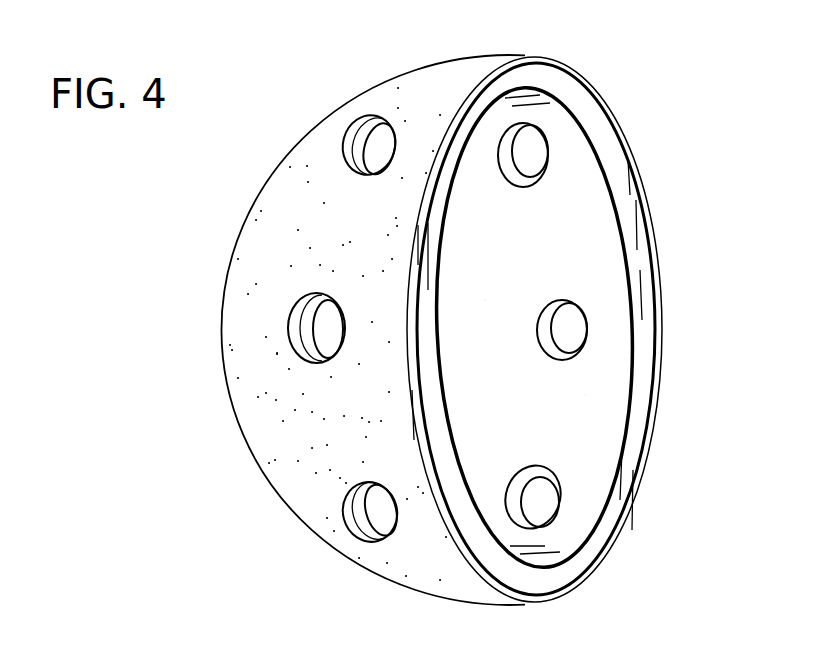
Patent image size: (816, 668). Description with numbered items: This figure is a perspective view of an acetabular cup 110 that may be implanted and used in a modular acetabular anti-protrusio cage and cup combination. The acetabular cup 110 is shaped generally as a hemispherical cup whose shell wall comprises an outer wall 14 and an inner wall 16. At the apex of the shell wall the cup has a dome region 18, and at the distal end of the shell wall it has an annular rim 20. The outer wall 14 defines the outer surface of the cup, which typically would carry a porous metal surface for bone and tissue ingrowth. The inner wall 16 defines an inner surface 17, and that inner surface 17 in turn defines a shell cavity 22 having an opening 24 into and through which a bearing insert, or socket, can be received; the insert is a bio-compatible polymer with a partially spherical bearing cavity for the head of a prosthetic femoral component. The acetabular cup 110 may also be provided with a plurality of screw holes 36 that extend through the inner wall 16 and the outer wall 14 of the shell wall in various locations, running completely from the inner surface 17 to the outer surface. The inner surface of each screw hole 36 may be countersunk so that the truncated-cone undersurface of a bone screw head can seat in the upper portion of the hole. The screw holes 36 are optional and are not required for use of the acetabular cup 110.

The acetabular cup 110 is at (173, 454).
The outer wall 14 is at (600, 572).
The inner wall 16 is at (556, 120).
The inner surface 17 is at (472, 288).
The dome region 18 is at (215, 317).
The annular rim 20 is at (563, 82).
The shell cavity 22 is at (592, 388).
The opening 24 is at (612, 283).
The screw holes 36 is at (373, 148).